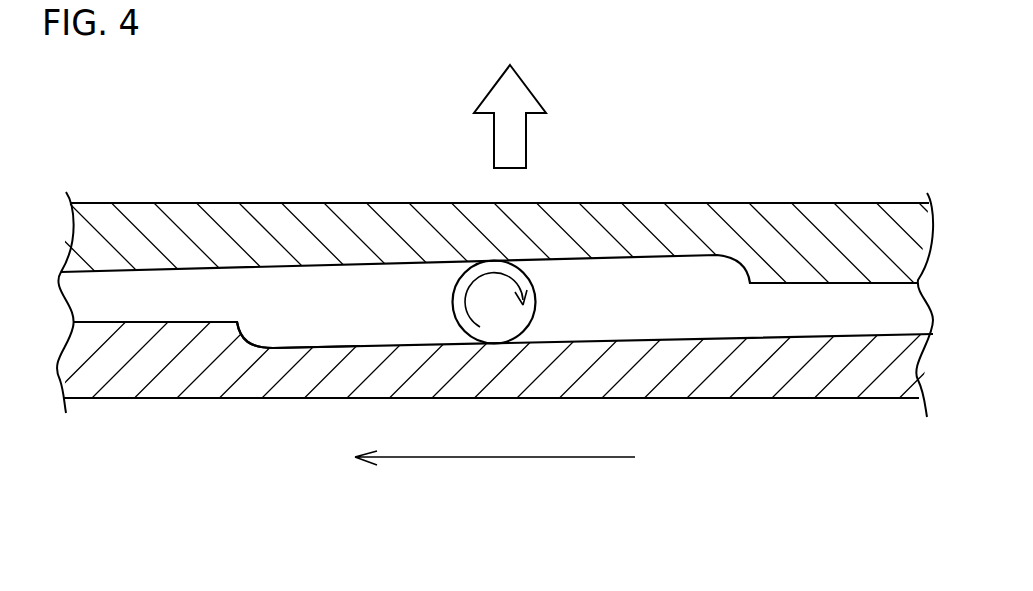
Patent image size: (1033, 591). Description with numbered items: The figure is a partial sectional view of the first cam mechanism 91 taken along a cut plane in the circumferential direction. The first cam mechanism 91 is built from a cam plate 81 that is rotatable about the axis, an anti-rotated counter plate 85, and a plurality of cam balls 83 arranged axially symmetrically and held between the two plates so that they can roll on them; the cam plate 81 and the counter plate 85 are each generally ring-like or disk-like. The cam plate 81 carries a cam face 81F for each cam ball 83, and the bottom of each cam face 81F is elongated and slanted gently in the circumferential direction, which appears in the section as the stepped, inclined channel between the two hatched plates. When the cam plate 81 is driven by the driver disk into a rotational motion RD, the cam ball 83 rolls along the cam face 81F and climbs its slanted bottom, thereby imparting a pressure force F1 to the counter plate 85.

The counter plate 85 is at (173, 203).
The cam plate 81 is at (154, 400).
The cam face 81F is at (331, 349).
The cam ball 83 is at (537, 297).
The first cam mechanism 91 is at (683, 116).
The pressure force F1 is at (494, 134).
The rotational motion RD is at (502, 458).